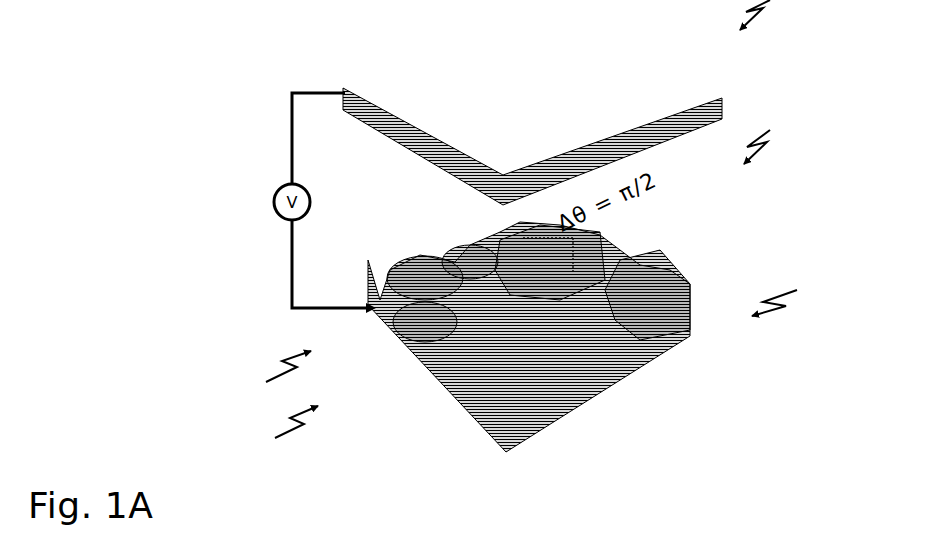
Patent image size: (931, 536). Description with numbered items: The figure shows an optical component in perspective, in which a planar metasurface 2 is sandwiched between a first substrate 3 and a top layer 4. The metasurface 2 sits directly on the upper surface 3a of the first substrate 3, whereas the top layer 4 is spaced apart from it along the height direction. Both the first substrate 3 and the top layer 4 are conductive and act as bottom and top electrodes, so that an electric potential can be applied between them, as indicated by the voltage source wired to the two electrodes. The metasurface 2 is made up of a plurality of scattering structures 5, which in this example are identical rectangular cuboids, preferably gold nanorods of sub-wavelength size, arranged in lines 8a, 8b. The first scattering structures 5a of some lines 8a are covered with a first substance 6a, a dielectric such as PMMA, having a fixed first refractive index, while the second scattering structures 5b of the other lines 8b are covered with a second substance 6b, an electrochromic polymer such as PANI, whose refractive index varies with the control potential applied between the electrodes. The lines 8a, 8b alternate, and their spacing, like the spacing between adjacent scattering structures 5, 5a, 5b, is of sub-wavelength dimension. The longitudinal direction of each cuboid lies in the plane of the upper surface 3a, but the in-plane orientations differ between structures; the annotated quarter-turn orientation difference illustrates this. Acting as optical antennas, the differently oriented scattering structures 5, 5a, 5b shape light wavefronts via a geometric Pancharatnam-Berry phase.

The planar metasurface 2 is at (783, 298).
The first substrate 3 is at (603, 385).
The upper surface of the first substrate 3a is at (435, 358).
The top layer 4 is at (456, 72).
The scattering structures 5 is at (764, 132).
The first scattering structures 5a is at (437, 325).
The second scattering structures 5b is at (452, 278).
The first substance 6a is at (547, 390).
The second substance 6b is at (387, 312).
The first lines 8a is at (282, 426).
The second lines 8b is at (274, 370).